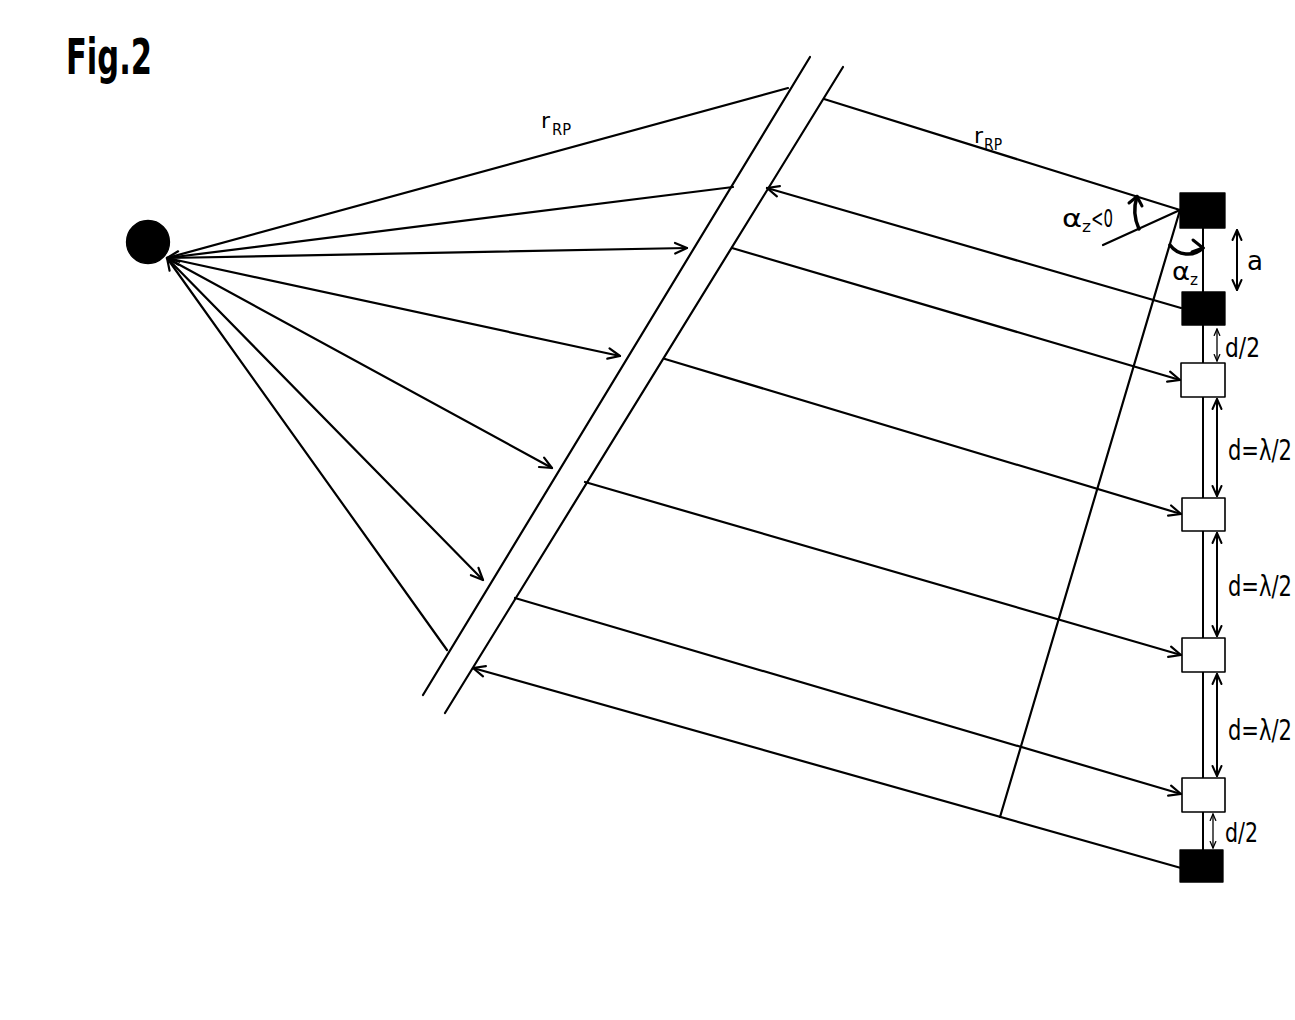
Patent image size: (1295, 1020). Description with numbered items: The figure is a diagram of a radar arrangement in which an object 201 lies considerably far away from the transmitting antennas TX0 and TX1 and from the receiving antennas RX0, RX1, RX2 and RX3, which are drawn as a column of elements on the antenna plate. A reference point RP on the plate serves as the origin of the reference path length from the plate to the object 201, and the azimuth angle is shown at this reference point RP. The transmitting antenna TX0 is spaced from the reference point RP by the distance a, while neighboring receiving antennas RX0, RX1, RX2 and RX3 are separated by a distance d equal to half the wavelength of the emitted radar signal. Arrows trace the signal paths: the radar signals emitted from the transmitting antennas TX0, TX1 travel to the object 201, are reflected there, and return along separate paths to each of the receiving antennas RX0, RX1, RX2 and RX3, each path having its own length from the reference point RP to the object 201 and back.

The object 201 is at (150, 221).
The reference point RP is at (1202, 196).
The transmitting antenna TX0 is at (1227, 309).
The transmitting antenna TX1 is at (1225, 867).
The receiving antenna RX0 is at (1225, 382).
The receiving antenna RX1 is at (1226, 517).
The receiving antenna RX2 is at (1226, 657).
The receiving antenna RX3 is at (1226, 795).